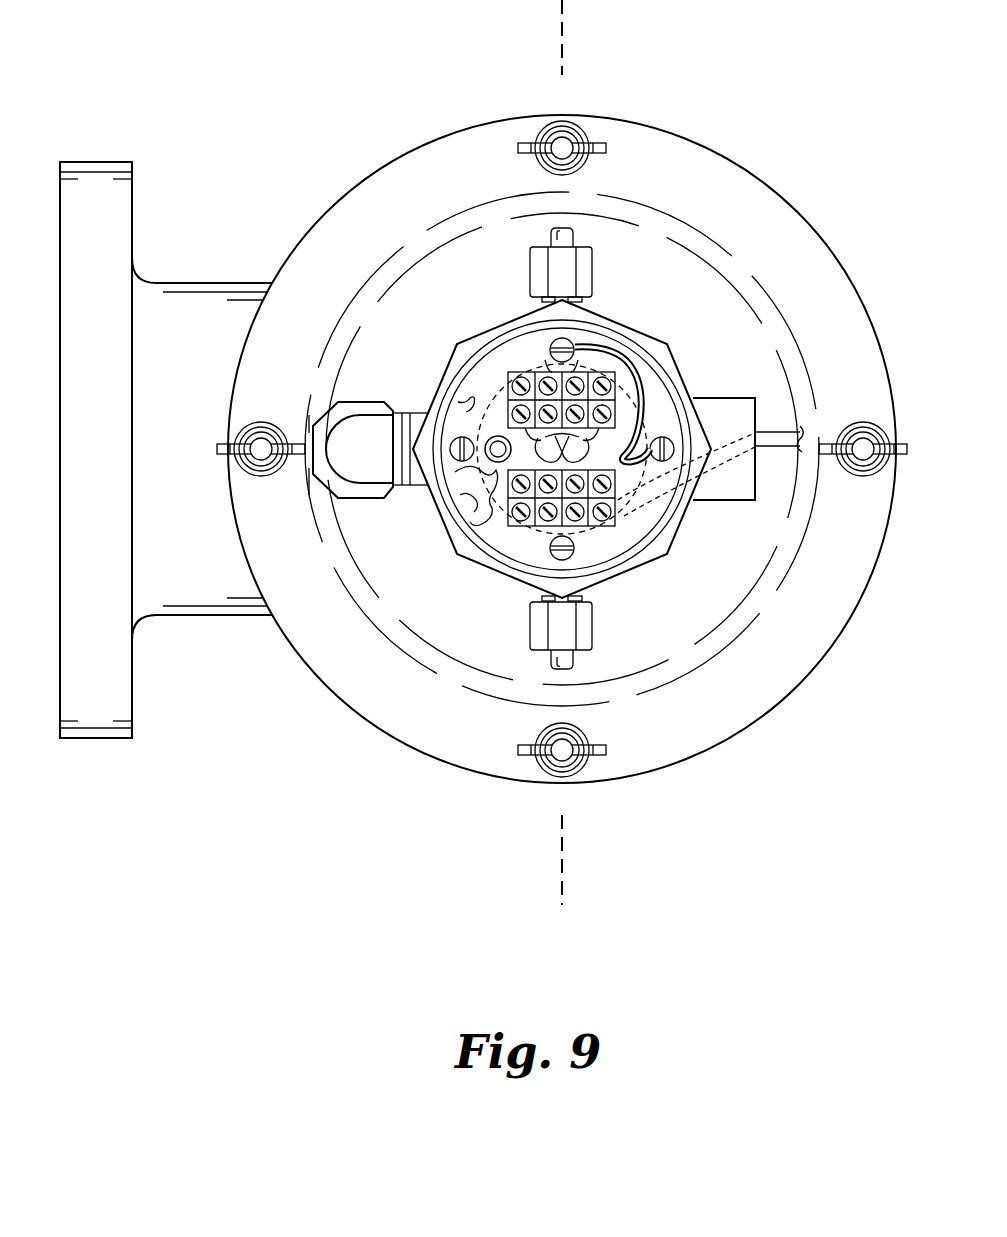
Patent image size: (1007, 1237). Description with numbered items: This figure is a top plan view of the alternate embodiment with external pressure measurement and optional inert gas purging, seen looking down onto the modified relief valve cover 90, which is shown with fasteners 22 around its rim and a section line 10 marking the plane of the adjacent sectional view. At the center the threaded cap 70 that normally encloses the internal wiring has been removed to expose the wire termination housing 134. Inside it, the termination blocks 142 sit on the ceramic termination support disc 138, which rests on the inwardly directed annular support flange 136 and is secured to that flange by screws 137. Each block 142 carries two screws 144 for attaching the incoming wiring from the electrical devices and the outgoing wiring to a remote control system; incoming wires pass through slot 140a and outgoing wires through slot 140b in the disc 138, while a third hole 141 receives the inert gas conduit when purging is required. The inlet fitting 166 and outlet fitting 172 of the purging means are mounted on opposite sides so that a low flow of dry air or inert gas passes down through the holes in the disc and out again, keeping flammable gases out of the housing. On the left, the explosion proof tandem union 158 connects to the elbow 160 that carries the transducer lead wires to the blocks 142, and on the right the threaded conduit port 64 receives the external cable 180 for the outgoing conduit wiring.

The section line 10 is at (542, 40).
The cover screws 22 is at (600, 142).
The modified cover 90 is at (752, 212).
The threaded cap 70 is at (642, 333).
The inlet fitting 166 is at (593, 292).
The outlet fitting 172 is at (597, 630).
The wire termination blocks 142 is at (533, 352).
The screws 144 is at (518, 522).
The screws 137 is at (551, 556).
The termination housing 134 is at (512, 352).
The hole 141 is at (475, 400).
The termination support disc 138 is at (470, 412).
The annular support flange 136 is at (468, 500).
The wire passage slot 140a is at (658, 518).
The wire passage slot 140b is at (662, 398).
The conduit port 64 is at (757, 398).
The cable 180 is at (775, 448).
The tandem union 158 is at (331, 406).
The elbow 160 is at (337, 493).